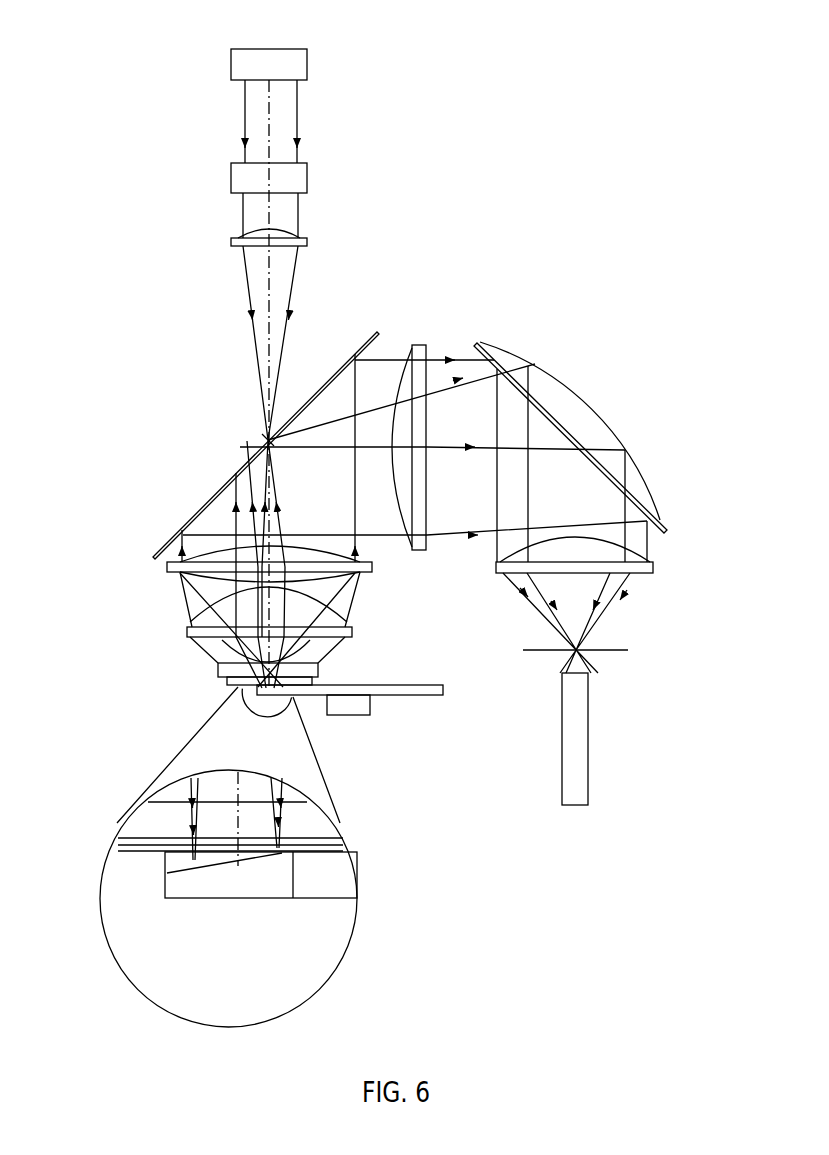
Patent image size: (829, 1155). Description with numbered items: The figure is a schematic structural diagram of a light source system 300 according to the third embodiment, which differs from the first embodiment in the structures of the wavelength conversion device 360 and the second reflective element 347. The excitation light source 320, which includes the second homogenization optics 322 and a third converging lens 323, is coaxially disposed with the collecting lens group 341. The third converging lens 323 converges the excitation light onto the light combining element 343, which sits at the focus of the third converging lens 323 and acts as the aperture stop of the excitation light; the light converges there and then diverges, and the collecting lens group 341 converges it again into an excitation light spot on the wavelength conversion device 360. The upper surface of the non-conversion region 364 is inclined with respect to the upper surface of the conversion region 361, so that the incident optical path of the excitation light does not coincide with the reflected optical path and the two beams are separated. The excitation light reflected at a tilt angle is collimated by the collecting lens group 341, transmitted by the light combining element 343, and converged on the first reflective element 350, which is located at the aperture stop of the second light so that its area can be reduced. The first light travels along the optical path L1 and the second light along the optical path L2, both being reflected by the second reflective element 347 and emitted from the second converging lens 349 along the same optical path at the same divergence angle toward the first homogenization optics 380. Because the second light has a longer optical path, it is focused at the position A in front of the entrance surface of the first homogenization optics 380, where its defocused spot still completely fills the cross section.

The light source system 300 is at (150, 45).
The excitation light source 320 is at (284, 63).
The second homogenization optics 322 is at (289, 185).
The third converging lens 323 is at (283, 240).
The light combining element 343 is at (367, 331).
The optical path L1 is at (437, 356).
The first reflective element 350 is at (241, 446).
The optical path L2 is at (556, 445).
The second reflective element 347 is at (603, 444).
The second converging lens 349 is at (587, 552).
The collecting lens group 341 is at (308, 611).
The conversion region 361 is at (417, 684).
The wavelength conversion device 360 is at (390, 692).
The position A is at (584, 649).
The first homogenization optics 380 is at (578, 756).
The non-conversion region 364 is at (233, 883).